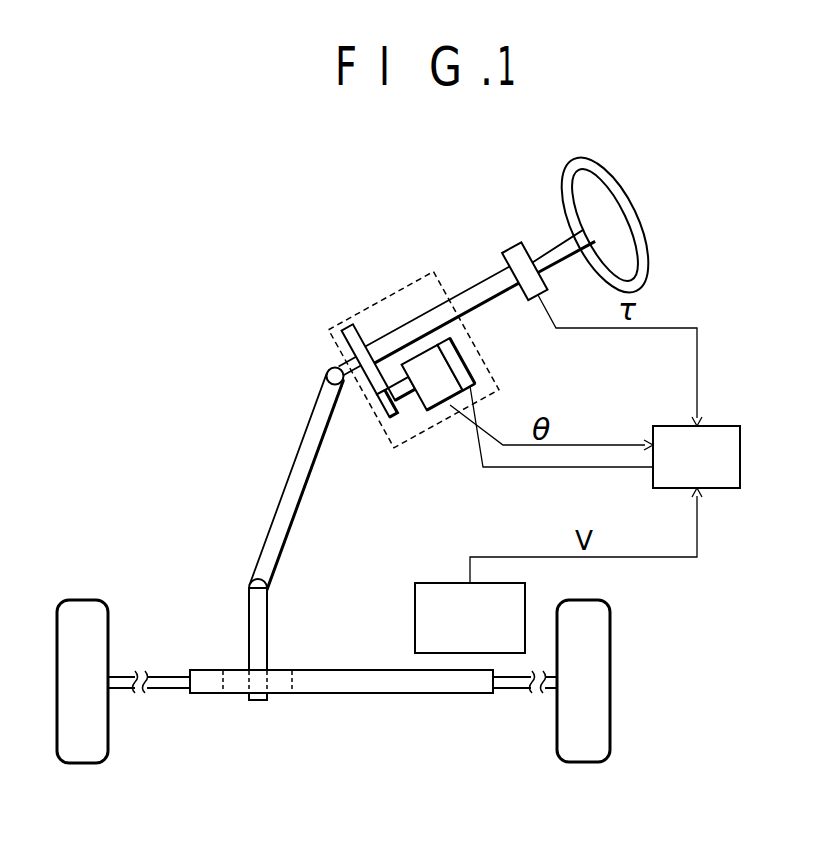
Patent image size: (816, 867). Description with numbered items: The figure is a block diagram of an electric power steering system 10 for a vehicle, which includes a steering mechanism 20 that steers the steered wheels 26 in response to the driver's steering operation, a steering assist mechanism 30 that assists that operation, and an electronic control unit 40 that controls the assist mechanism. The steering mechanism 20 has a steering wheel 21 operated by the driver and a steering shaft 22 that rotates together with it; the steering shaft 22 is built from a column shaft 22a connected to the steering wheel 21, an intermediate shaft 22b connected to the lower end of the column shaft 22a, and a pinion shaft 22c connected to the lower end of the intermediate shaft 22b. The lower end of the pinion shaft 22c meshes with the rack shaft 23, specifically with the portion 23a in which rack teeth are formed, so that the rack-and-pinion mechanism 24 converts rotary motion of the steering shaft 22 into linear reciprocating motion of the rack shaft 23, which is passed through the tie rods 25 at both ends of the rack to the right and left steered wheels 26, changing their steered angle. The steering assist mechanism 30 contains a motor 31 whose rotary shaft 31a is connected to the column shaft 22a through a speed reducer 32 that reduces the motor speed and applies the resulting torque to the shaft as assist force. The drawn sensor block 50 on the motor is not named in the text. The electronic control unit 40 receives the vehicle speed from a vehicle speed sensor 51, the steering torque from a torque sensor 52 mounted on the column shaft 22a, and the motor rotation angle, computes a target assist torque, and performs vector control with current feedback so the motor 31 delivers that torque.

The electric power steering system 10 is at (742, 277).
The steering mechanism 20 is at (516, 259).
The steering wheel 21 is at (634, 217).
The steering shaft 22 is at (253, 476).
The column shaft 22a is at (326, 369).
The intermediate shaft 22b is at (288, 478).
The pinion shaft 22c is at (223, 568).
The rack shaft 23 is at (341, 710).
The portion in which rack teeth are formed 23a is at (292, 695).
The rack-and-pinion mechanism 24 is at (238, 663).
The tie rods 25 is at (168, 690).
The steered wheels 26 is at (80, 764).
The steering assist mechanism 30 is at (429, 372).
The motor 31 is at (447, 405).
The rotary shaft 31a is at (408, 403).
The speed reducer 32 is at (370, 398).
The electronic control unit (ECU) 40 is at (742, 455).
The rotation angle sensor 50 is at (468, 358).
The vehicle speed sensor 51 is at (436, 583).
The torque sensor 52 is at (509, 248).